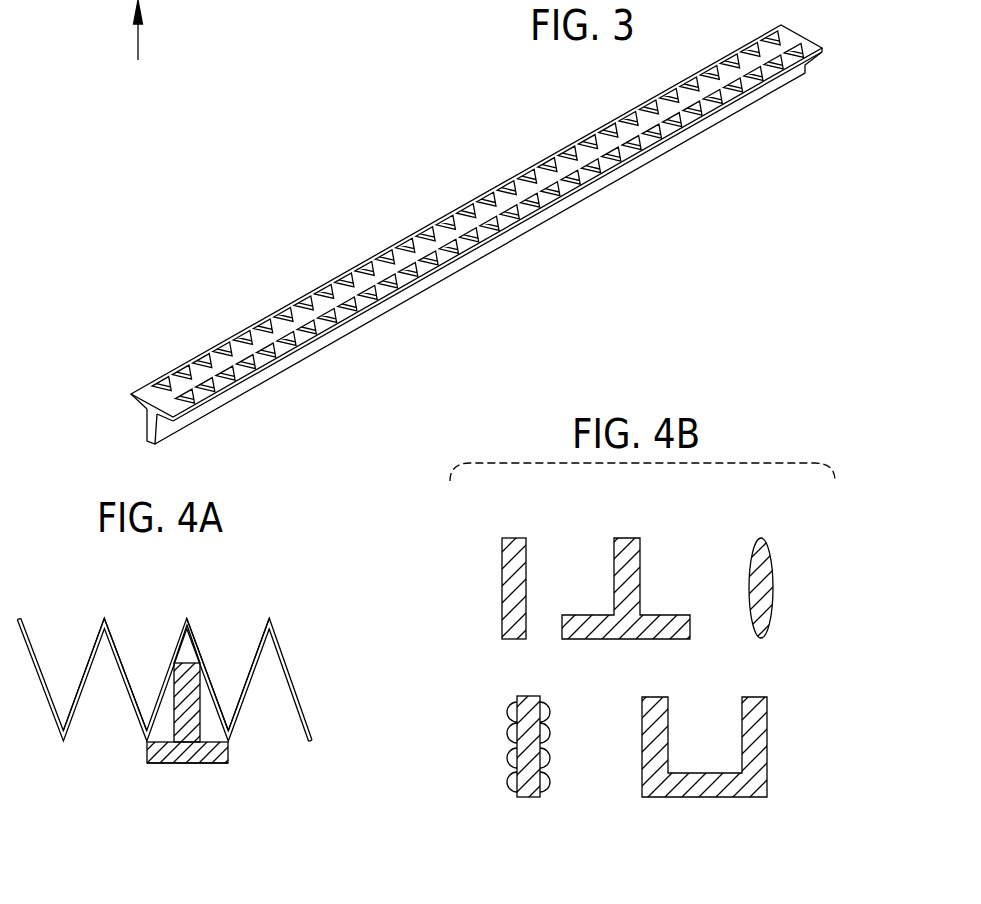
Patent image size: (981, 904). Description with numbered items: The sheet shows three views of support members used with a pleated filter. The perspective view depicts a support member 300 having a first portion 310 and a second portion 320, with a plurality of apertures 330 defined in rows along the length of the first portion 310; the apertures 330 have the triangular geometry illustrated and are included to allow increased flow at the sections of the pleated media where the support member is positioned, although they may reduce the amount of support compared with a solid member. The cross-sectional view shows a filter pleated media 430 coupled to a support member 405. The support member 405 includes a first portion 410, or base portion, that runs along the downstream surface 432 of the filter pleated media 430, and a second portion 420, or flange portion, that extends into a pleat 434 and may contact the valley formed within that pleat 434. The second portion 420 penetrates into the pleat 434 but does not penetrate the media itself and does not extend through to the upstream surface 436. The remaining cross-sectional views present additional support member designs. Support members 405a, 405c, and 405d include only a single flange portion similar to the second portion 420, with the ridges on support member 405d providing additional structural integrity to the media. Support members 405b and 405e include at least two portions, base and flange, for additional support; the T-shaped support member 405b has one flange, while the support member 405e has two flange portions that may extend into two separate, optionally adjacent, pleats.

In FIG. 3, the support member 300 is at (360, 205).
In FIG. 3, the first portion 310 is at (131, 392).
In FIG. 3, the second portion 320 is at (163, 426).
In FIG. 3, the apertures 330 is at (222, 342).
In FIG. 4A, the support member 405 is at (146, 755).
In FIG. 4A, the first portion 410 is at (213, 763).
In FIG. 4A, the second portion 420 is at (188, 661).
In FIG. 4A, the filter pleated media 430 is at (31, 626).
In FIG. 4A, the downstream surface 432 is at (268, 746).
In FIG. 4A, the pleat 434 is at (203, 620).
In FIG. 4A, the upstream surface 436 is at (128, 612).
In FIG. 4B, the support member 405a is at (520, 538).
In FIG. 4B, the support member 405b is at (632, 538).
In FIG. 4B, the support member 405c is at (763, 538).
In FIG. 4B, the support member 405d is at (528, 696).
In FIG. 4B, the support member 405e is at (658, 697).